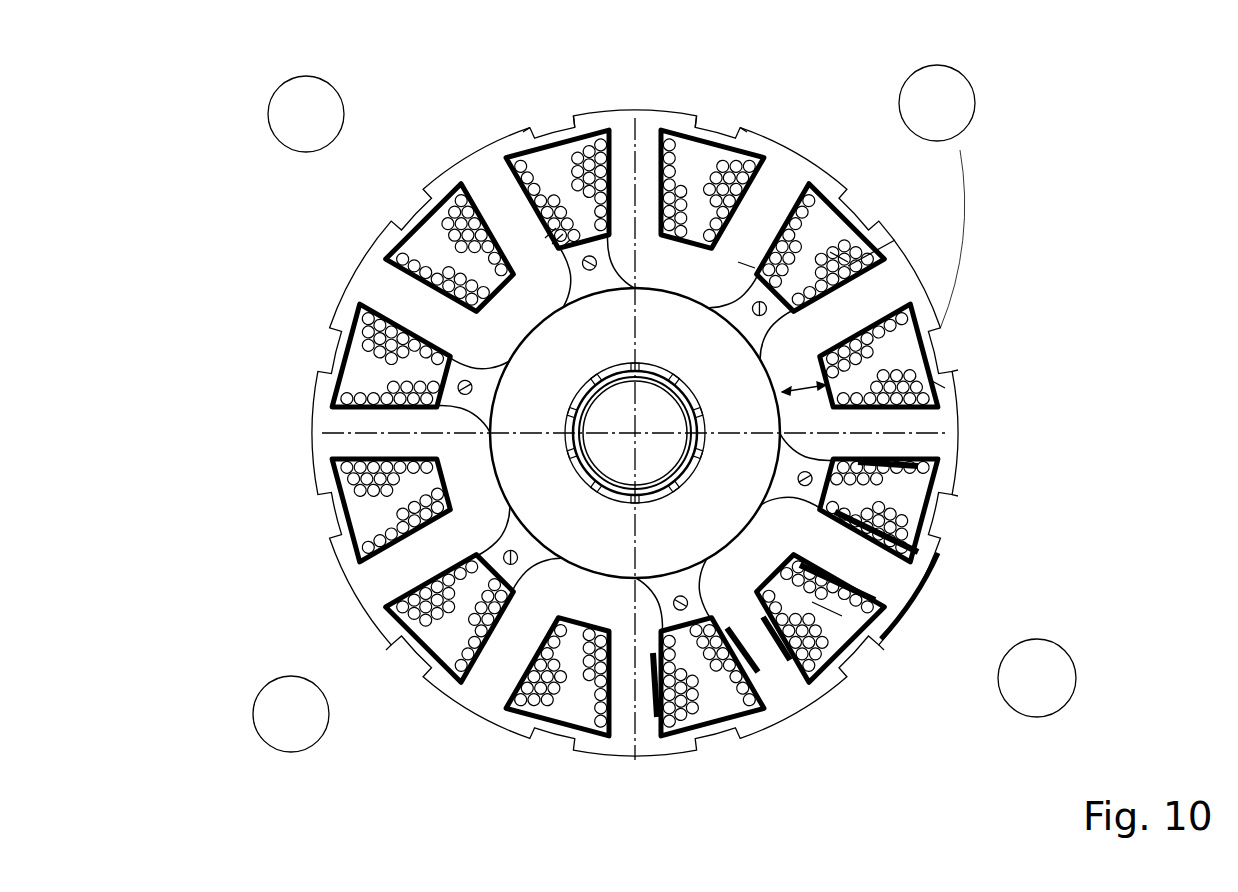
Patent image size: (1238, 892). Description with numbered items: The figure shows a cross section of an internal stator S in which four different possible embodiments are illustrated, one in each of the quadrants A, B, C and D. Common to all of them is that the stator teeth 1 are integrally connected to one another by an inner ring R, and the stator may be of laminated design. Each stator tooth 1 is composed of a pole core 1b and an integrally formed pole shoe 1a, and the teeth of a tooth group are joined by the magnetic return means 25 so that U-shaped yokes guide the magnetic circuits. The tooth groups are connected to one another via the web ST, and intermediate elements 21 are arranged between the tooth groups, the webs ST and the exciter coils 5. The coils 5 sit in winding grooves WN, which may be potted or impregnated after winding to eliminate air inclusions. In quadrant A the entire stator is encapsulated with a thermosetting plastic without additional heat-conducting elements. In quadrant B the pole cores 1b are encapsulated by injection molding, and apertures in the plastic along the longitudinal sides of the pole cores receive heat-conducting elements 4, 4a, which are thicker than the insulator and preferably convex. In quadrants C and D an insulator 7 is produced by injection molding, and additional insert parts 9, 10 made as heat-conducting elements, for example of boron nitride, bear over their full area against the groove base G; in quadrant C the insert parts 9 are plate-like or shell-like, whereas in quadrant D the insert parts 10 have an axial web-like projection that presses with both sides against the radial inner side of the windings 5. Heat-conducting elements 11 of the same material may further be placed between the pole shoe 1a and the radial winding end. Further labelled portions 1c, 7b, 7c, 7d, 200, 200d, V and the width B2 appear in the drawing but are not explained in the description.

The stator tooth 1 is at (432, 165).
The pole shoe 1a is at (518, 150).
The pole core 1b is at (640, 158).
The slot insulation region 1c is at (548, 240).
The heat-conducting element 4 is at (800, 585).
The heat-conducting element 4a is at (827, 609).
The coil 5 is at (800, 210).
The insulator 7 is at (873, 385).
The insulating element portion 7b is at (880, 248).
The insulating element portion 7c is at (945, 405).
The insulating element portion 7d is at (748, 262).
The insert part 9 is at (590, 607).
The insert part 10 is at (445, 368).
The heat-conducting element 11 is at (340, 497).
The intermediate element 21 is at (762, 315).
The magnetic return means 25 is at (700, 283).
The insulating film 200 is at (875, 455).
The insulating film portion 200d is at (855, 595).
The quadrant A is at (937, 103).
The quadrant B is at (1037, 678).
The quadrant C is at (291, 714).
The quadrant D is at (306, 114).
The groove base G is at (478, 280).
The internal stator S is at (1000, 138).
The web ST is at (605, 292).
The inner ring R is at (810, 432).
The potting / filling V is at (715, 185).
The winding groove WN is at (840, 250).
The width B2 is at (804, 382).